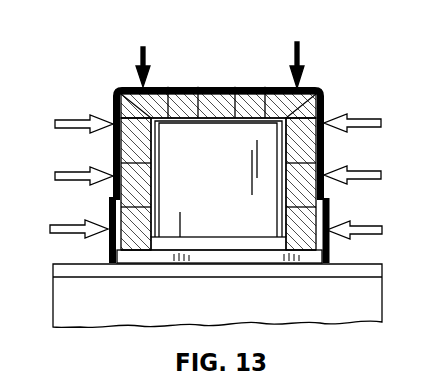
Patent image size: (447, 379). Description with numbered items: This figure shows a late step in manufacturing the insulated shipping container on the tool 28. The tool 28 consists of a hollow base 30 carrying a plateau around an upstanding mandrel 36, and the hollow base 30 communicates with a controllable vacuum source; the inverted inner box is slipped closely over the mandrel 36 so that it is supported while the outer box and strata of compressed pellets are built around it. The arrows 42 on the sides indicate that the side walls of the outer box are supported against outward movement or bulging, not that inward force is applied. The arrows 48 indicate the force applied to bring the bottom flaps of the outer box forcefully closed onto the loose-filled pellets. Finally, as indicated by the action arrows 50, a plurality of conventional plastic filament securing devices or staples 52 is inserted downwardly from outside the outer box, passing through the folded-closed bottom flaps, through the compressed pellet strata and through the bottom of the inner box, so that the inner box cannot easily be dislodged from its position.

The tool 28 is at (332, 88).
The hollow base 30 is at (229, 308).
The mandrel 36 is at (228, 178).
The arrows 42 is at (62, 118).
The arrows 48 is at (135, 57).
The action arrows 50 is at (262, 80).
The plastic filament securing devices 52 is at (274, 86).